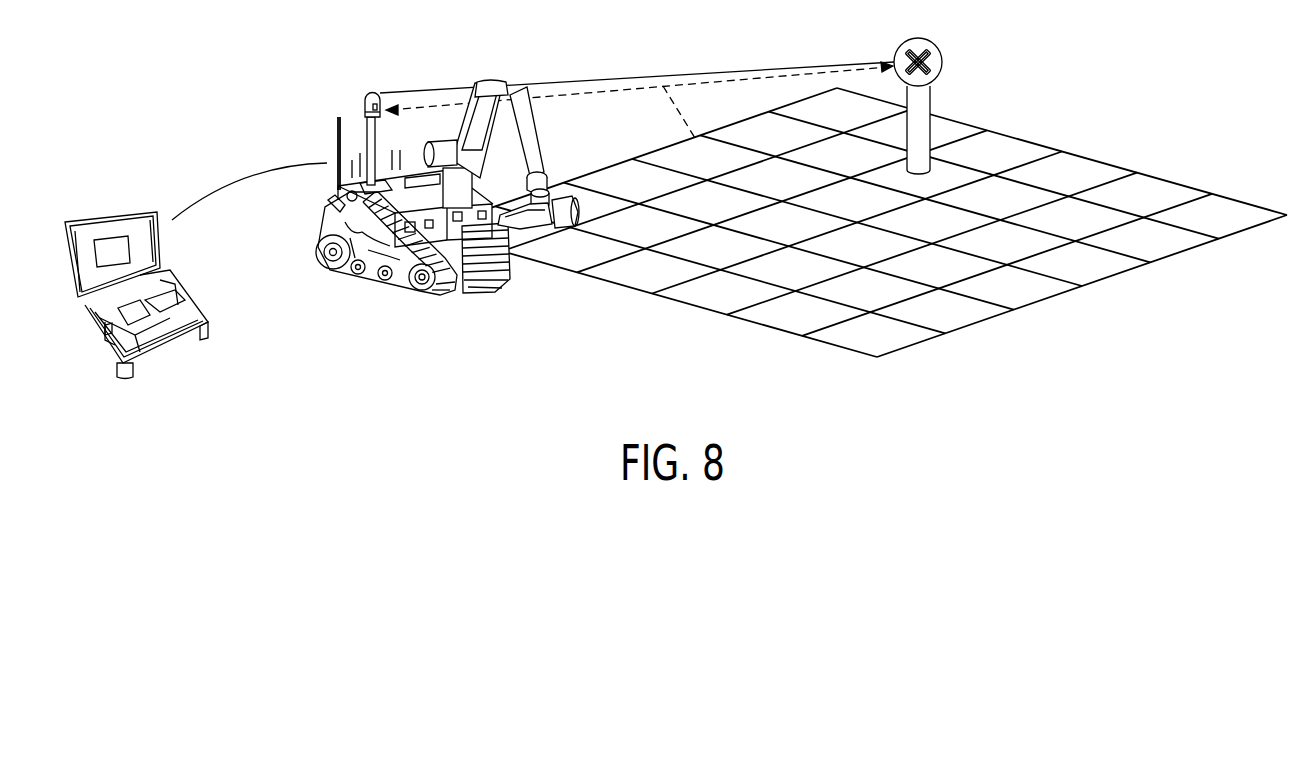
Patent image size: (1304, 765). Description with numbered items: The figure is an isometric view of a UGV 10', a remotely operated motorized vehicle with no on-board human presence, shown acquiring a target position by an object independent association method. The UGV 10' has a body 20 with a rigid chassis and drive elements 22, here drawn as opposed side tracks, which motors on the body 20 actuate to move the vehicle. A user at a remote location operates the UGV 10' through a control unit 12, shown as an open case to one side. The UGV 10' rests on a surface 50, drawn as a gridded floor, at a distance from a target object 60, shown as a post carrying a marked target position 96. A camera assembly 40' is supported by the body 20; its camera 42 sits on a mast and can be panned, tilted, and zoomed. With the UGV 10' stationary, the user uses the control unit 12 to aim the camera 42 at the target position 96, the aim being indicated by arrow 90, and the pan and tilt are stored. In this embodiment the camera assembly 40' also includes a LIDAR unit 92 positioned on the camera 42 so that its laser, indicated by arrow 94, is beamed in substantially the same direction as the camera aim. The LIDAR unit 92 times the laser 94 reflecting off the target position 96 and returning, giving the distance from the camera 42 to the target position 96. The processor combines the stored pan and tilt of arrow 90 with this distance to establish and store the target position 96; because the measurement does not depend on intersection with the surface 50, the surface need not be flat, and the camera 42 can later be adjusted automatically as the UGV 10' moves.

The UGV 10' is at (429, 194).
The control unit 12 is at (118, 203).
The body 20 is at (327, 213).
The drive elements 22 is at (390, 284).
The camera assembly 40' is at (356, 109).
The camera 42 is at (373, 92).
The surface 50 is at (1066, 166).
The target object 60 is at (955, 103).
The arrow indicating camera aim 90 is at (661, 77).
The LIDAR unit 92 is at (360, 104).
The laser 94 is at (682, 129).
The target position 96 is at (945, 100).